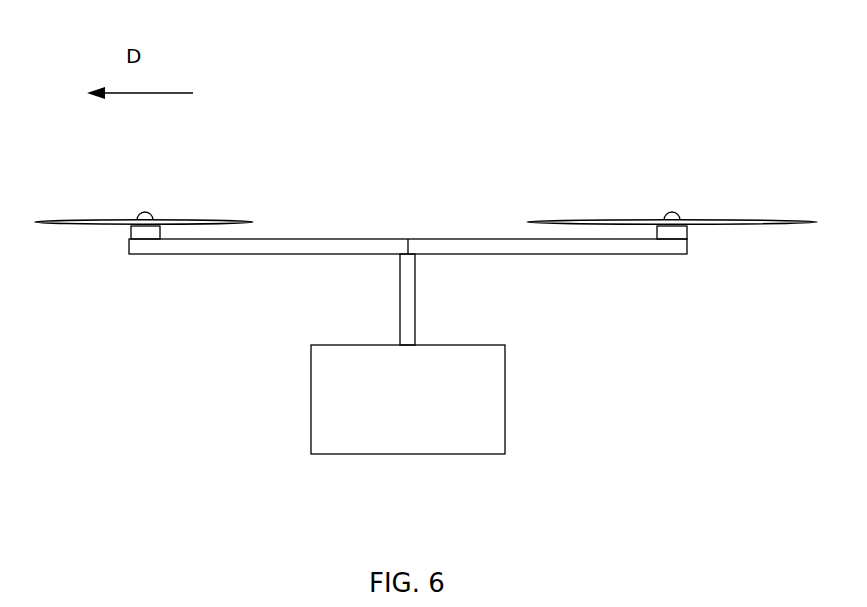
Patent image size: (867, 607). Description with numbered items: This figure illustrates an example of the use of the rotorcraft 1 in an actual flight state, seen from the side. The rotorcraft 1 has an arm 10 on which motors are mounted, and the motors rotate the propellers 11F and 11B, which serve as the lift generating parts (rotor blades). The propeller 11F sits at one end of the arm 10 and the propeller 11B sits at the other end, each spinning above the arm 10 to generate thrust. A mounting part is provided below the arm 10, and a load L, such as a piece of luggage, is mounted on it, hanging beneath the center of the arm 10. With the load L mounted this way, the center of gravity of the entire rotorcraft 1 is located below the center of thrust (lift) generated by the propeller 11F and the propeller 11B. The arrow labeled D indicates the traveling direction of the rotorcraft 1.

The rotorcraft 1 is at (435, 86).
The arm 10 is at (353, 247).
The propeller 11F is at (149, 210).
The propeller 11B is at (674, 210).
The load L is at (420, 445).